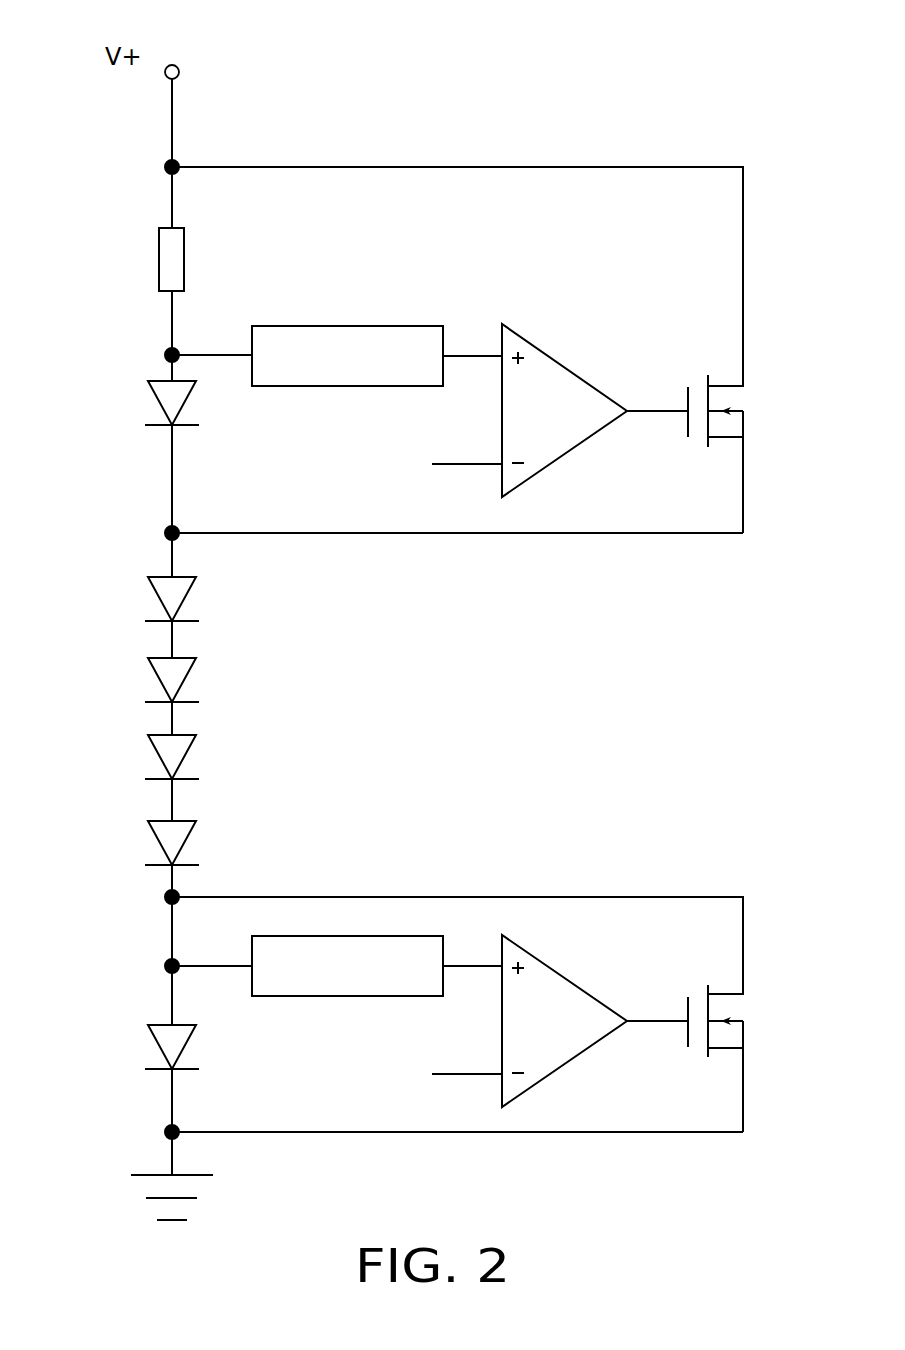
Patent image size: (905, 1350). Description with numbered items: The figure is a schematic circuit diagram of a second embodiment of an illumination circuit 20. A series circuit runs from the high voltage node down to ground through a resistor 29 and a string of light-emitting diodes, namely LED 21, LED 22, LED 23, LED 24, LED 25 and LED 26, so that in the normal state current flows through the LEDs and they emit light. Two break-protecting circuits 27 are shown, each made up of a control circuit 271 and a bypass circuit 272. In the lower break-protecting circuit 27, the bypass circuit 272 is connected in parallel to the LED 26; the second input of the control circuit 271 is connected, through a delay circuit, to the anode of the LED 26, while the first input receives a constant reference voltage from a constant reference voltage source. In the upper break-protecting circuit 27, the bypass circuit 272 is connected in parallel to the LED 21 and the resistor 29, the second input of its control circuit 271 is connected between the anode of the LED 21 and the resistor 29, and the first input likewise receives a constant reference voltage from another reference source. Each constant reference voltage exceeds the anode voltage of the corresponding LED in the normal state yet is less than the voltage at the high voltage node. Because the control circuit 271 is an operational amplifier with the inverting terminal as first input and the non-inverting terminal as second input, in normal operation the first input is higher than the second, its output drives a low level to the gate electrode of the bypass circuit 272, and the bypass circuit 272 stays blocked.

The illumination circuit 20 is at (437, 50).
The resistor 29 is at (164, 255).
The LED 21 is at (160, 405).
The LED 22 is at (160, 602).
The LED 23 is at (160, 678).
The LED 24 is at (160, 759).
The LED 25 is at (160, 843).
The LED 26 is at (160, 1045).
The break-protecting circuit 27 is at (503, 945).
The control circuit 271 is at (563, 977).
The bypass circuit 272 is at (733, 1020).